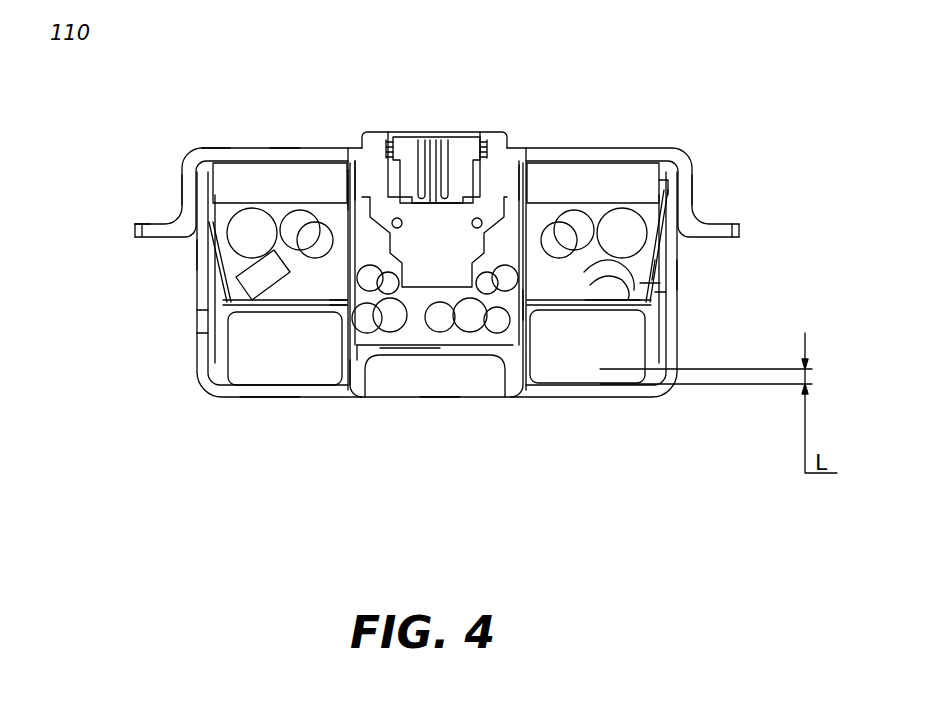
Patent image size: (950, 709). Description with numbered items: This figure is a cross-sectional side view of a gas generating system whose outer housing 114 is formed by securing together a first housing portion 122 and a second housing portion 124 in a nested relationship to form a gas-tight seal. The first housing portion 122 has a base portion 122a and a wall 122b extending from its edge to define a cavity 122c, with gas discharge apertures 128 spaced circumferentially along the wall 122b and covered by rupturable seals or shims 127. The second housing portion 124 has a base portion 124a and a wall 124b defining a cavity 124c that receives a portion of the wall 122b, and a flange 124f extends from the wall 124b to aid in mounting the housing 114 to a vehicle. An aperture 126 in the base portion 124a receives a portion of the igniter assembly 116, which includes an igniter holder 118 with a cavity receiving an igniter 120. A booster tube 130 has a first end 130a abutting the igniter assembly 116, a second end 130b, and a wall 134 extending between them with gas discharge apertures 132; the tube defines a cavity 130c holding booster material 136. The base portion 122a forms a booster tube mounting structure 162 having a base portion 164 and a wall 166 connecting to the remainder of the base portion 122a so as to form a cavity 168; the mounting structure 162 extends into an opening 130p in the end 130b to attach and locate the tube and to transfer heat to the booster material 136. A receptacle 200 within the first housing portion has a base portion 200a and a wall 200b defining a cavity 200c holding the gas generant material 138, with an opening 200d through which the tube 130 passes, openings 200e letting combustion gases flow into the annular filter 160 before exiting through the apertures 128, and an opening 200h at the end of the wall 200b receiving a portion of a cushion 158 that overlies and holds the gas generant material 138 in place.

The outer housing 114 is at (196, 144).
The igniter assembly 116 is at (376, 148).
The igniter holder 118 is at (402, 131).
The igniter 120 is at (432, 250).
The first housing portion 122 is at (198, 377).
The base portion 122a is at (270, 390).
The wall 122b is at (200, 253).
The cavity 122c is at (660, 276).
The second housing portion 124 is at (262, 150).
The base portion 124a is at (283, 150).
The wall 124b is at (190, 170).
The cavity 124c is at (660, 173).
The flange 124f is at (135, 223).
The aperture 126 is at (360, 163).
The seals or shims 127 is at (657, 290).
The gas discharge apertures 128 is at (203, 322).
The booster tube 130 is at (348, 403).
The first end 130a is at (520, 167).
The second end 130b is at (350, 375).
The cavity 130c is at (533, 303).
The opening 130p is at (455, 355).
The gas discharge apertures 132 is at (335, 300).
The wall 134 is at (338, 190).
The booster material 136 is at (517, 310).
The gas generant material 138 is at (240, 238).
The cushion or pad 158 is at (243, 180).
The filter 160 is at (270, 343).
The booster tube mounting structure 162 is at (447, 350).
The base portion 164 is at (408, 348).
The wall 166 is at (360, 347).
The cavity 168 is at (438, 385).
The receptacle 200 is at (655, 300).
The base portion 200a is at (580, 305).
The wall 200b is at (645, 285).
The cavity 200c is at (657, 268).
The opening 200d is at (340, 333).
The openings 200e is at (658, 368).
The opening 200h is at (660, 185).